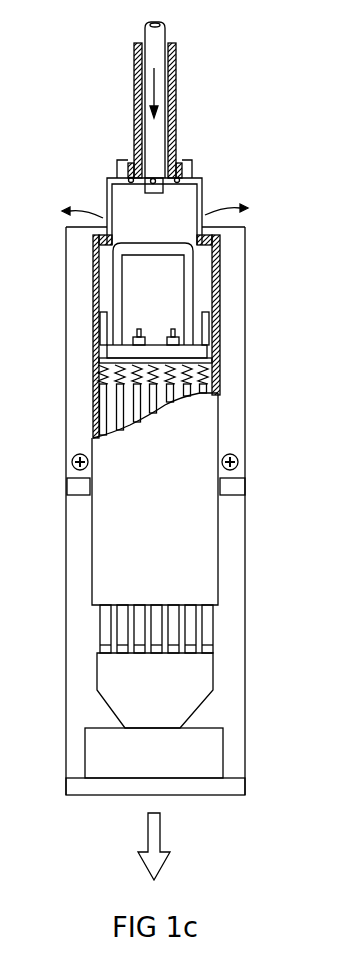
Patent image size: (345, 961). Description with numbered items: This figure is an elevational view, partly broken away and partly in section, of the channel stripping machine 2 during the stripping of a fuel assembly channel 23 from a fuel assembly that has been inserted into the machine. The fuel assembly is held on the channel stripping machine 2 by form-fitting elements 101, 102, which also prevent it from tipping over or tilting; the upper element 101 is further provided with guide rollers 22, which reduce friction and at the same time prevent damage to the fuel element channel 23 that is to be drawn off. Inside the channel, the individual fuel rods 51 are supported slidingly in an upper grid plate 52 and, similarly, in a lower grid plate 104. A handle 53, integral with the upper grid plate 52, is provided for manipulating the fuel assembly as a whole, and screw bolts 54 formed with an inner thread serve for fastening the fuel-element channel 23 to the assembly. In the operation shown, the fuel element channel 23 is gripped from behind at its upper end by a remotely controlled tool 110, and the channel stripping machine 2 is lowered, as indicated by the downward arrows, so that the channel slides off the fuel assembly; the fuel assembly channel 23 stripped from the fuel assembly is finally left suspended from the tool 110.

The channel stripping machine 2 is at (67, 392).
The remotely controlled tool 110 is at (203, 188).
The handle 53 is at (185, 280).
The screw bolts 54 is at (95, 326).
The upper grid plate 52 is at (200, 353).
The fuel assembly channel 23 is at (220, 540).
The guide rollers 22 is at (72, 463).
The upper form-fitting element 101 is at (72, 488).
The fuel rods 51 is at (203, 623).
The lower grid plate 104 is at (193, 677).
The lower form-fitting element 102 is at (102, 790).